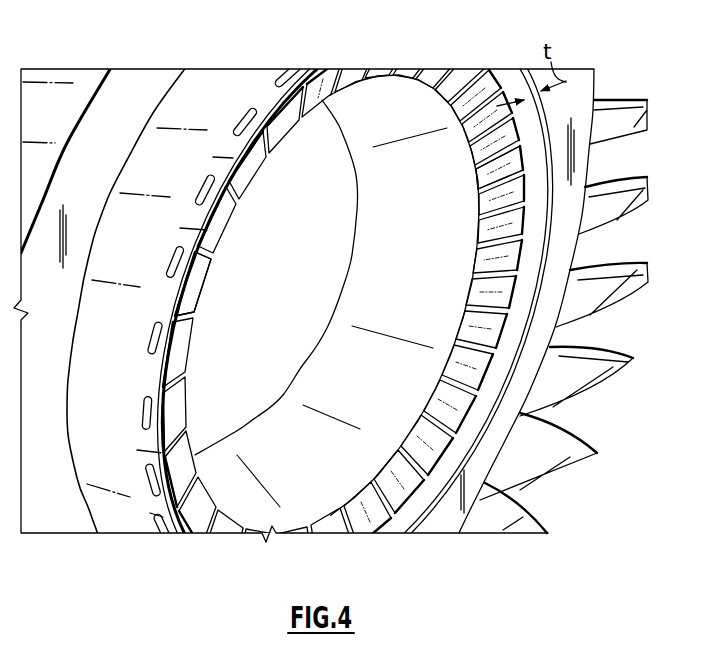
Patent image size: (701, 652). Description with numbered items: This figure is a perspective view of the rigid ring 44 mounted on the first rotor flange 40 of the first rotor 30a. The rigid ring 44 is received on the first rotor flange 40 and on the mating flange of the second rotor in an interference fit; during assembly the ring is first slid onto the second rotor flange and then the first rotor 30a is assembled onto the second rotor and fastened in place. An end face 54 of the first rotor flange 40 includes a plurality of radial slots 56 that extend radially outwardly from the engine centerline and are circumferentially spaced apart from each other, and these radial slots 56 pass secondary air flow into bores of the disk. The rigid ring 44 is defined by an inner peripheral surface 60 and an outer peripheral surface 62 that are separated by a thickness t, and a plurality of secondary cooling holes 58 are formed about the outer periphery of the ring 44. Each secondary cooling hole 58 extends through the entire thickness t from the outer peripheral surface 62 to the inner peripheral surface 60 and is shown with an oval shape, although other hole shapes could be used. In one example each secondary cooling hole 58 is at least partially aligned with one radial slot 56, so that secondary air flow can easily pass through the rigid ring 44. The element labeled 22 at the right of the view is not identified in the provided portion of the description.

The fan blades 22 is at (648, 282).
The first rotor 30a is at (598, 99).
The first rotor flange 40 is at (217, 100).
The rigid ring 44 is at (263, 100).
The end face 54 is at (313, 70).
The radial slots 56 is at (227, 213).
The secondary cooling holes 58 is at (173, 260).
The inner peripheral surface 60 is at (542, 164).
The outer peripheral surface 62 is at (183, 313).